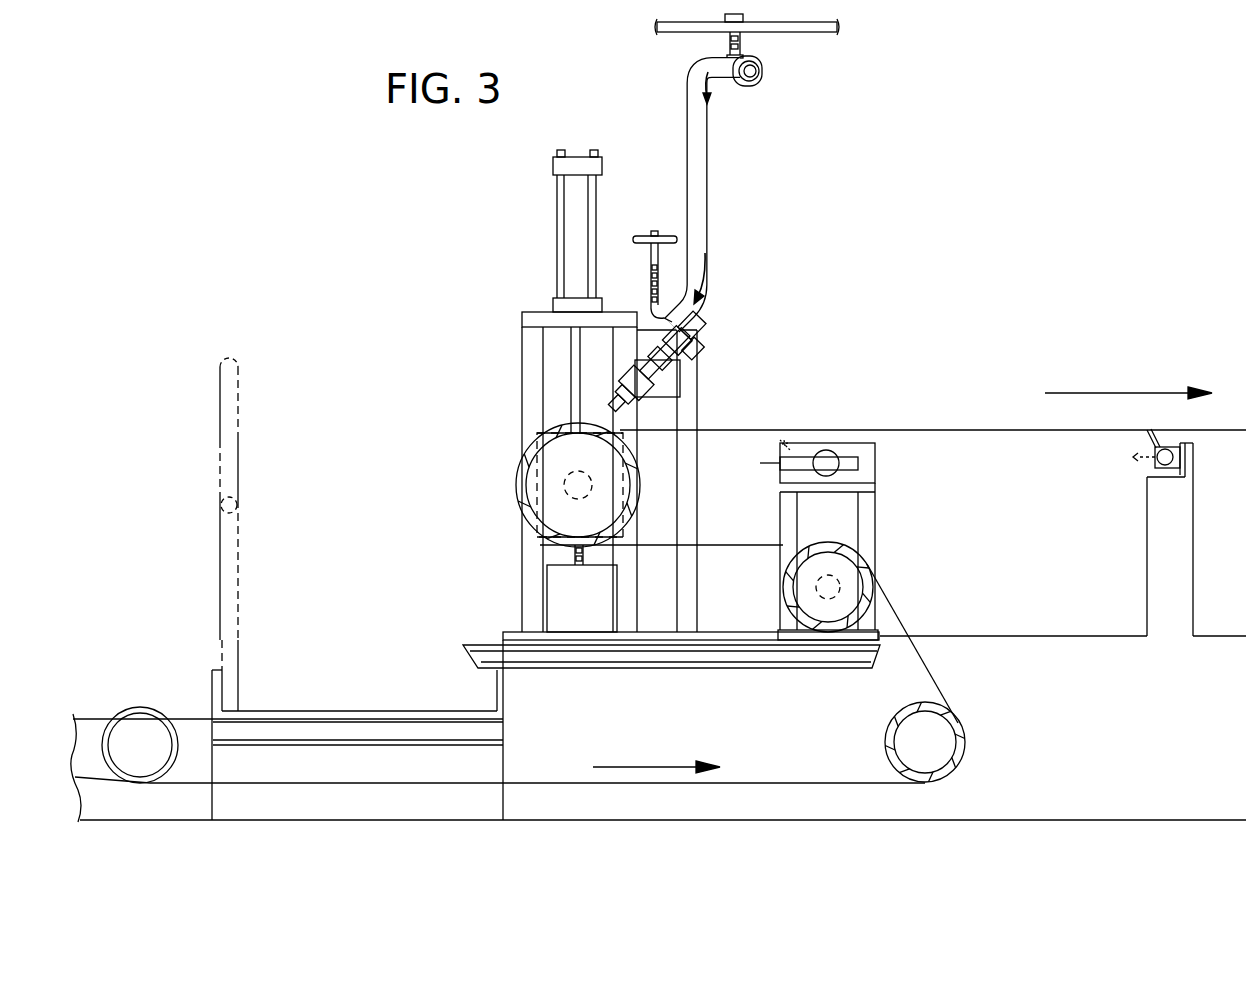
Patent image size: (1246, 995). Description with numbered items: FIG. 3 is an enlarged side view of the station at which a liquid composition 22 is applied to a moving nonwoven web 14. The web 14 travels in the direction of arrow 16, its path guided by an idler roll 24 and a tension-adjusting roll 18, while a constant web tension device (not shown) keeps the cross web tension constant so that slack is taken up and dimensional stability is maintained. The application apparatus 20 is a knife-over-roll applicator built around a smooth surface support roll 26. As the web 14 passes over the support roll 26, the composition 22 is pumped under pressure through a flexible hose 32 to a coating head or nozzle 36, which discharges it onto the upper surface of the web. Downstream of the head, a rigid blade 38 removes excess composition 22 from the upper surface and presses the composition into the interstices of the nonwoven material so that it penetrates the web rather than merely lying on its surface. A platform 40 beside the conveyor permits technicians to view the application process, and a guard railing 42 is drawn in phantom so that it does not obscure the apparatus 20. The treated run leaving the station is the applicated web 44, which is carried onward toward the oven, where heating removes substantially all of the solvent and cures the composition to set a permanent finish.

The nonwoven web 14 is at (517, 470).
The arrow 16 is at (1112, 395).
The tension-adjusting roll 18 is at (140, 707).
The apparatus for applying composition 20 is at (478, 222).
The composition 22 is at (605, 417).
The idler roll 24 is at (783, 572).
The support roll 26 is at (545, 448).
The flexible hose 32 is at (718, 200).
The coating head 36 is at (618, 387).
The rigid blade 38 is at (630, 443).
The platform 40 is at (290, 711).
The guard railing 42 is at (238, 445).
The applicated web 44 is at (876, 428).